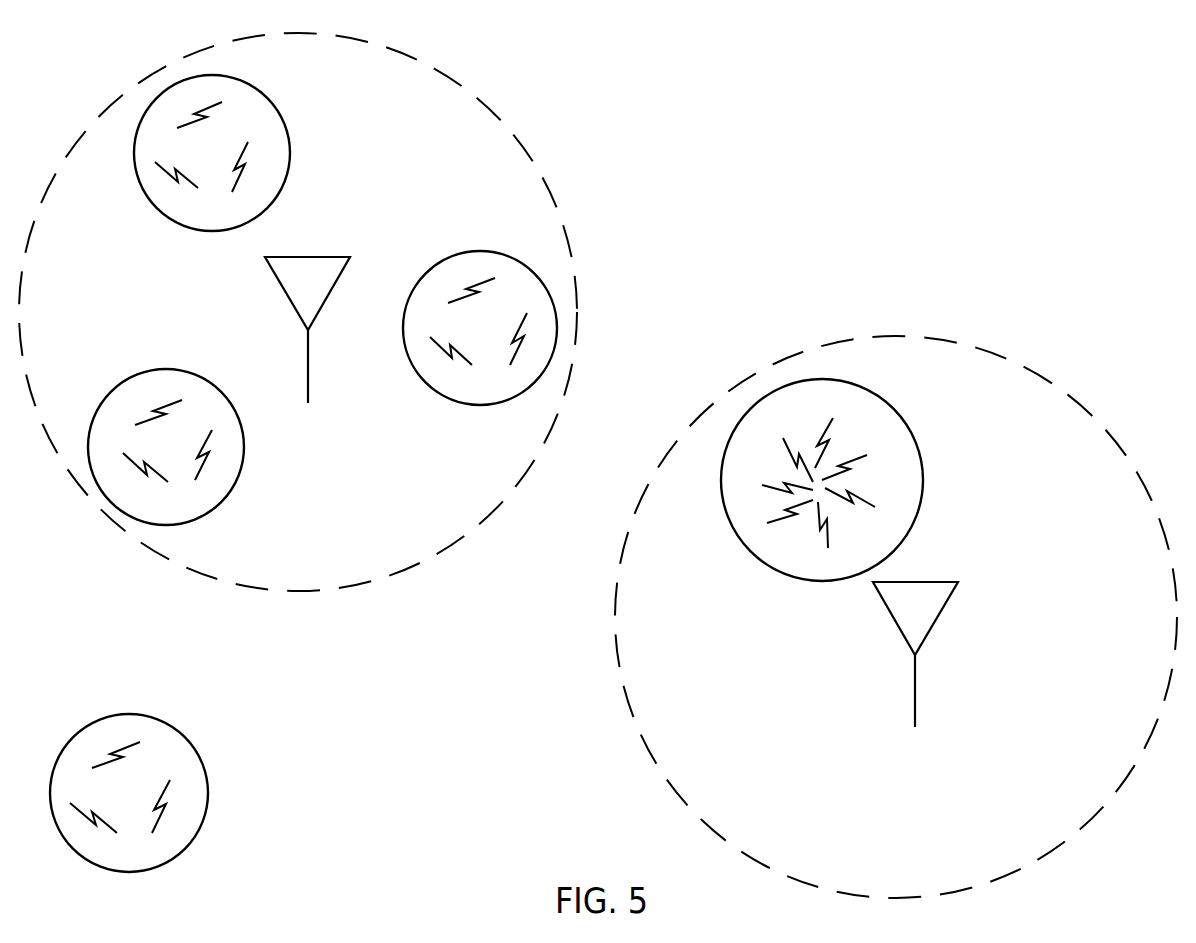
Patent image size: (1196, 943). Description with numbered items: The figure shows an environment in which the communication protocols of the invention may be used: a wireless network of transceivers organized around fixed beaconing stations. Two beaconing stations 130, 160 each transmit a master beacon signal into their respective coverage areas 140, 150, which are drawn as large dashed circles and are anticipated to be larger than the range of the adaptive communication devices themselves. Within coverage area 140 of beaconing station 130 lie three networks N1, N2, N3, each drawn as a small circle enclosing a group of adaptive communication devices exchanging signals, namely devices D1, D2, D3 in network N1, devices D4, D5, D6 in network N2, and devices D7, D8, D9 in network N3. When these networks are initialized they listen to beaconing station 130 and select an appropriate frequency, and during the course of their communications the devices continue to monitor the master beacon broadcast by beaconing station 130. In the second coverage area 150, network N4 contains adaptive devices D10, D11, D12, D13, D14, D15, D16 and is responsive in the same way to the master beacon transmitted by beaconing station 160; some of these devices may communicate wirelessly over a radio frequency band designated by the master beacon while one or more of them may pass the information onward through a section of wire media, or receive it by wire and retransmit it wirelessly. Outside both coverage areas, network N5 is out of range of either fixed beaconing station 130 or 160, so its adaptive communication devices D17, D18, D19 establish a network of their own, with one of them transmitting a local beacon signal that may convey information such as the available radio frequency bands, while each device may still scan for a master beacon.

The beaconing station 130 is at (293, 286).
The coverage area 140 is at (534, 134).
The coverage area 150 is at (1018, 349).
The beaconing station 160 is at (900, 606).
The network N1 is at (265, 95).
The network N2 is at (497, 250).
The network N3 is at (125, 379).
The network N4 is at (897, 407).
The network N5 is at (137, 716).
The adaptive communication device D1 is at (190, 131).
The adaptive communication device D2 is at (193, 198).
The adaptive communication device D3 is at (242, 145).
The adaptive communication device D4 is at (456, 300).
The adaptive communication device D5 is at (524, 315).
The adaptive communication device D6 is at (471, 370).
The adaptive communication device D7 is at (142, 423).
The adaptive communication device D8 is at (211, 435).
The adaptive communication device D9 is at (159, 488).
The adaptive device D10 is at (787, 446).
The adaptive device D11 is at (840, 428).
The adaptive device D12 is at (872, 461).
The adaptive device D13 is at (870, 508).
The adaptive device D14 is at (831, 542).
The adaptive device D15 is at (779, 523).
The adaptive device D16 is at (772, 477).
The adaptive communication device D17 is at (102, 769).
The adaptive communication device D18 is at (164, 789).
The adaptive communication device D19 is at (113, 837).